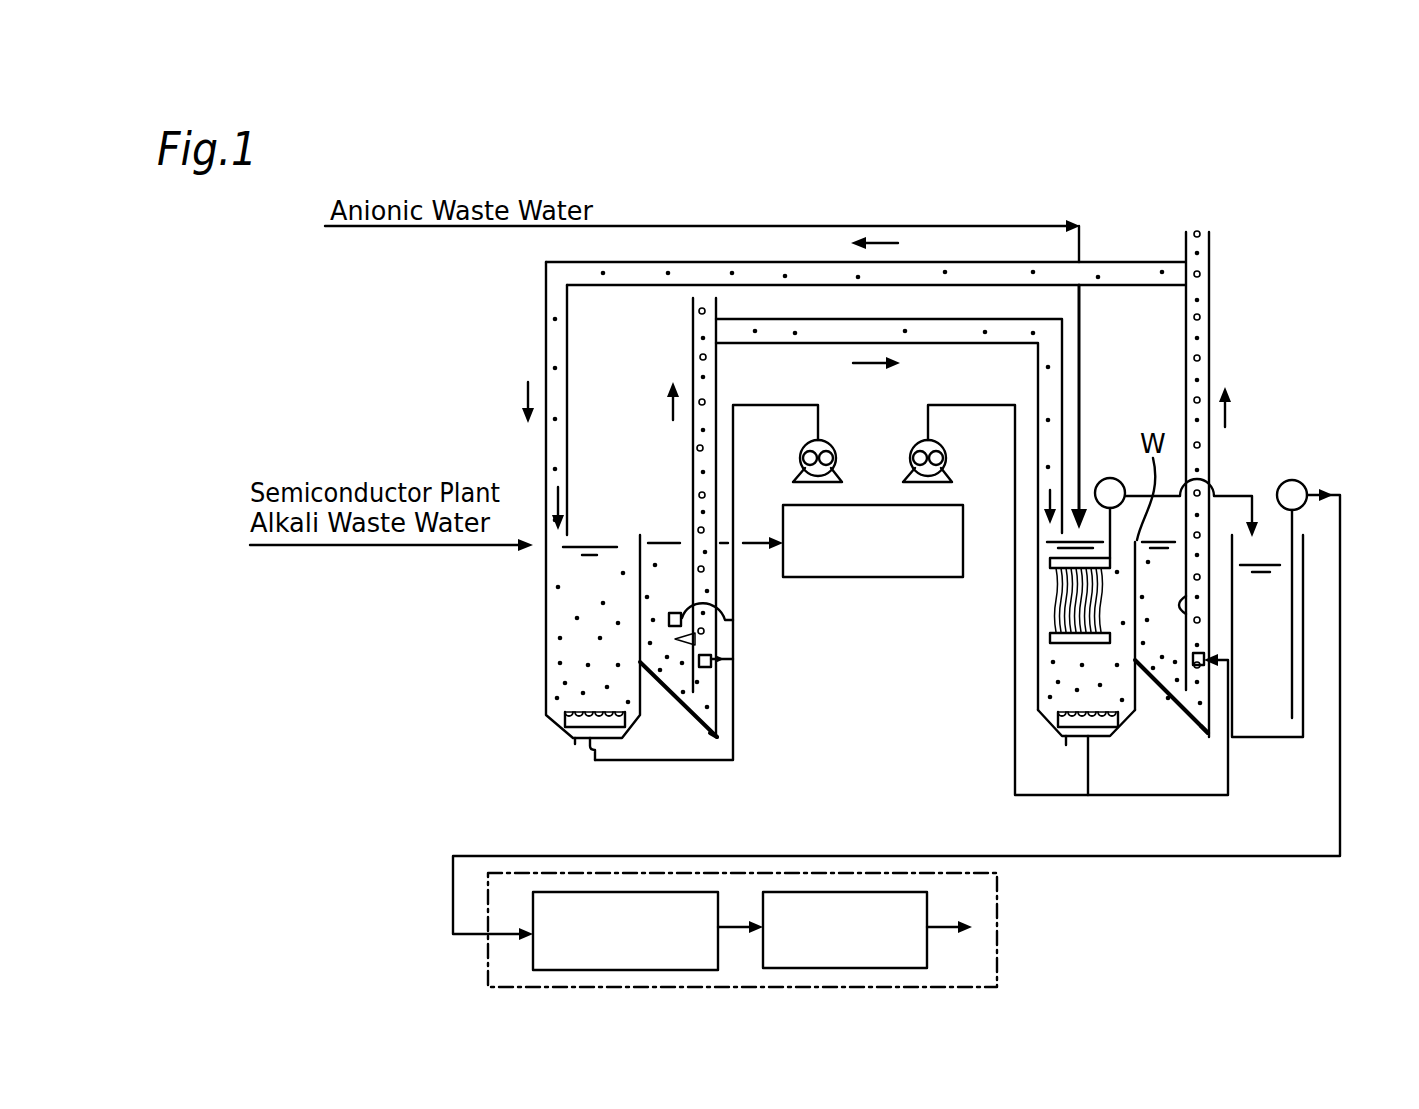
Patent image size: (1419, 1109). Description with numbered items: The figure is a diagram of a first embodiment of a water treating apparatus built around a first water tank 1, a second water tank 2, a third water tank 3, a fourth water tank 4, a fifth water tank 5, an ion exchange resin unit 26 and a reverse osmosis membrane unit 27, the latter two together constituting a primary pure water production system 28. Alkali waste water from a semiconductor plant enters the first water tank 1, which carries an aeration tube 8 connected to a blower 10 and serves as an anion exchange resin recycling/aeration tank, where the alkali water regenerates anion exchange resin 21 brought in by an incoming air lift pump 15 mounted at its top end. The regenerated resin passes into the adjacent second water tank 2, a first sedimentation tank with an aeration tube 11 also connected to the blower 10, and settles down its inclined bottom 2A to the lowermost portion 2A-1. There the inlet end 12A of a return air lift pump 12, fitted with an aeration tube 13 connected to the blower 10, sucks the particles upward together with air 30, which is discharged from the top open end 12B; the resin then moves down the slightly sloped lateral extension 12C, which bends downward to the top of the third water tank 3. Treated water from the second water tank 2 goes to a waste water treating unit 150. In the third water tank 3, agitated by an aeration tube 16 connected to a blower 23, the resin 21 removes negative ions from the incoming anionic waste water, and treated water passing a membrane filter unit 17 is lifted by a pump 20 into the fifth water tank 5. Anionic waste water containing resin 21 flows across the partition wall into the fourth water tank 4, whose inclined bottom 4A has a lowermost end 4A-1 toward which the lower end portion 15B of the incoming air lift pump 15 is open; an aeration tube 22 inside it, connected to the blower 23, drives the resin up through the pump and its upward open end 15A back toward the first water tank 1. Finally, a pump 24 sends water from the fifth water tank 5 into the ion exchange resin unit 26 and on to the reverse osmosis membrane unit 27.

The first water tank 1 is at (537, 687).
The second water tank 2 is at (693, 730).
The inclined bottom 2A is at (679, 683).
The lowermost portion 2A-1 is at (712, 727).
The third water tank 3 is at (1064, 755).
The fourth water tank 4 is at (1200, 745).
The inclined bottom 4A is at (1165, 680).
The lowermost end 4A-1 is at (1192, 710).
The fifth water tank 5 is at (1315, 702).
The aeration tube 8 is at (575, 742).
The blower 10 is at (802, 468).
The aeration tube 11 is at (675, 613).
The return air lift pump 12 is at (680, 464).
The inlet end 12A is at (695, 640).
The top open end 12B is at (713, 308).
The lateral extension 12C is at (808, 343).
The aeration tube 13 is at (707, 667).
The incoming air lift pump 15 is at (545, 463).
The open end 15A is at (1184, 250).
The lower end portion 15B is at (1180, 605).
The aeration tube 16 is at (1058, 718).
The membrane filter unit 17 is at (1050, 560).
The pump 20 is at (1108, 478).
The anion exchange resin 21 is at (553, 319).
The aeration tube 22 is at (1197, 665).
The blower 23 is at (945, 450).
The pump 24 is at (1303, 483).
The ion exchange resin unit 26 is at (533, 957).
The reverse osmosis membrane unit 27 is at (928, 911).
The primary pure water production system 28 is at (1000, 915).
The air 30 is at (703, 402).
The waste water treating unit 150 is at (873, 577).